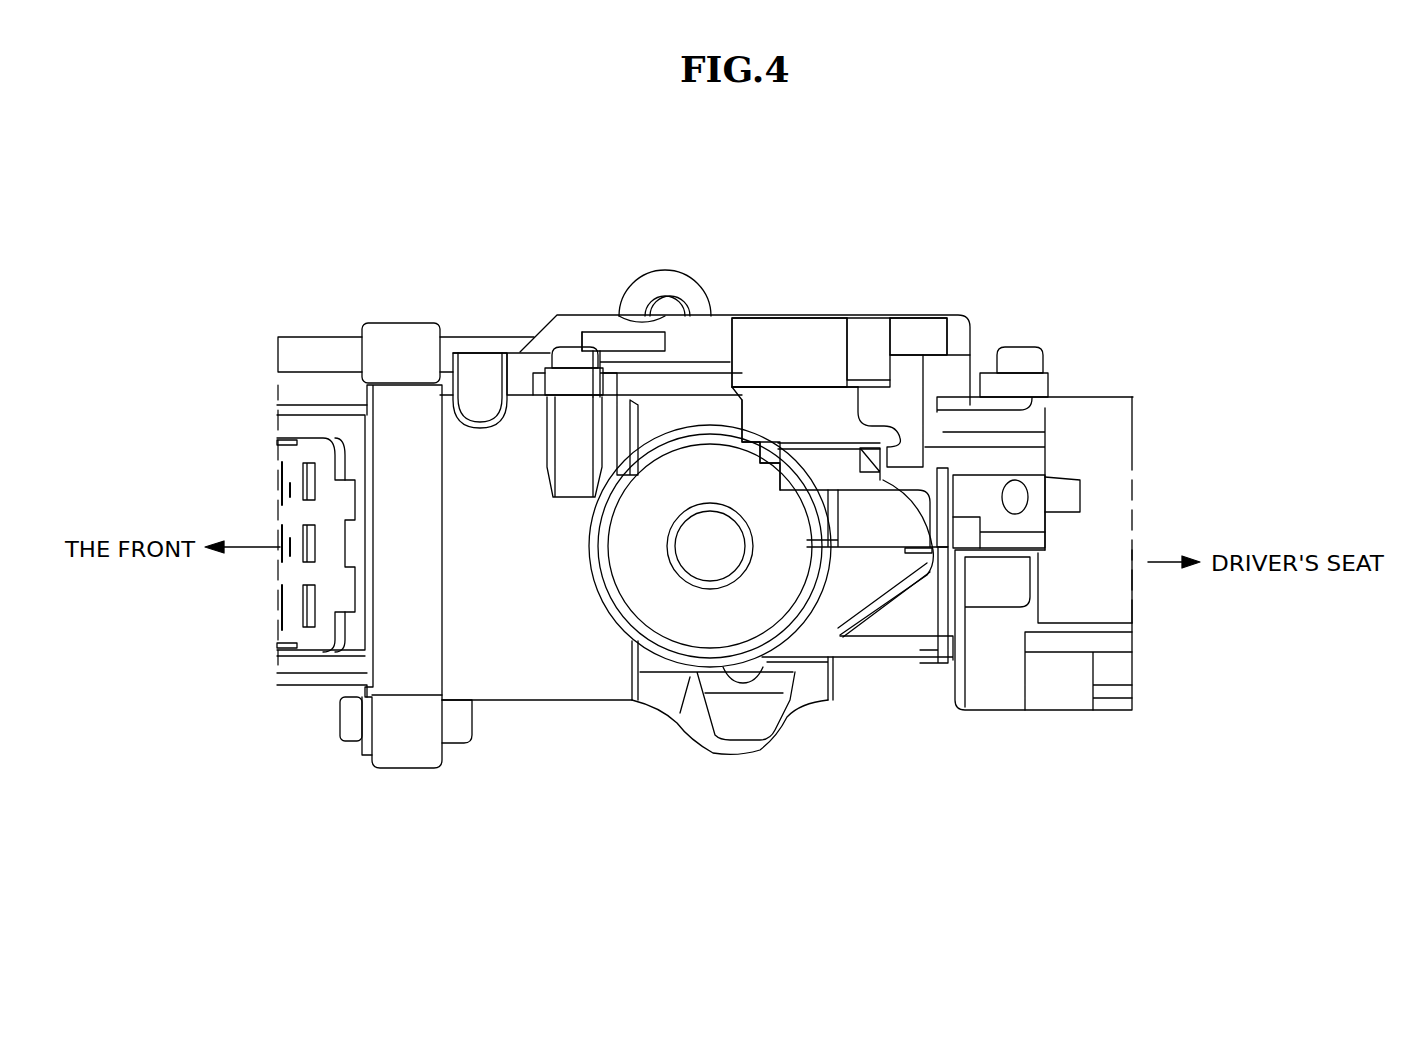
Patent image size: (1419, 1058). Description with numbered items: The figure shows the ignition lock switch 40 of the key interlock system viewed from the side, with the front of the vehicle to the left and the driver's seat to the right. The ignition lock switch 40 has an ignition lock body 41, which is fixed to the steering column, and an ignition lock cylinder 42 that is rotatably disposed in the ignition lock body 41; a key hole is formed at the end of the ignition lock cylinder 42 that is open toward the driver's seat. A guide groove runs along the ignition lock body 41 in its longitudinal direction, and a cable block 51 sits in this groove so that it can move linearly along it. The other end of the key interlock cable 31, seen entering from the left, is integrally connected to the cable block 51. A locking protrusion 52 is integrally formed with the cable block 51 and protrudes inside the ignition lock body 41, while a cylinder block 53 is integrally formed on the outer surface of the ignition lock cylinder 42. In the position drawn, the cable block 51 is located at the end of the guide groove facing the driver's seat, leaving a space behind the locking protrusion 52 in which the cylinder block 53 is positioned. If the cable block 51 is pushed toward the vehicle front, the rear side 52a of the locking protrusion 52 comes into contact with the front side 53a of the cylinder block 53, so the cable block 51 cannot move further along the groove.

The key interlock cable 31 is at (318, 345).
The ignition lock switch 40 is at (712, 299).
The ignition lock body 41 is at (910, 325).
The ignition lock cylinder 42 is at (885, 520).
The cable block 51 is at (777, 333).
The locking protrusion 52 is at (905, 405).
The rear side of block protrusion 52a is at (838, 435).
The cylinder block 53 is at (848, 473).
The front side of cylinder block 53a is at (927, 520).